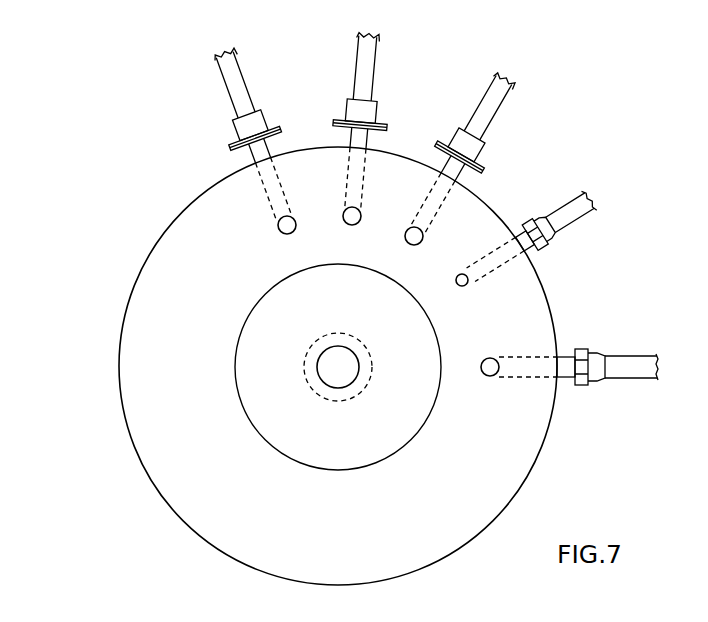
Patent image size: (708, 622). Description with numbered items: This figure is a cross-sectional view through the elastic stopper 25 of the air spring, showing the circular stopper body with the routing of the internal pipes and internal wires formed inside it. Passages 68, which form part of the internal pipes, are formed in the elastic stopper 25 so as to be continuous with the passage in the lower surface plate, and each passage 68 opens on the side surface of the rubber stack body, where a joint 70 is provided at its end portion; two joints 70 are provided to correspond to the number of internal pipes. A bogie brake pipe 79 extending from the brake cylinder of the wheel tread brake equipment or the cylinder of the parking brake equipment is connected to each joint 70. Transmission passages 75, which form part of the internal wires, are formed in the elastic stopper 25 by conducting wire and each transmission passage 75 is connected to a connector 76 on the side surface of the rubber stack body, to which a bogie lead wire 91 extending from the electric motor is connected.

The elastic stopper 25 is at (118, 368).
The bogie lead wire 91 is at (226, 88).
The connector 76 is at (229, 146).
The transmission passage 75 is at (276, 217).
The passage 68 is at (500, 265).
The joint 70 is at (542, 243).
The bogie brake pipe 79 is at (578, 206).